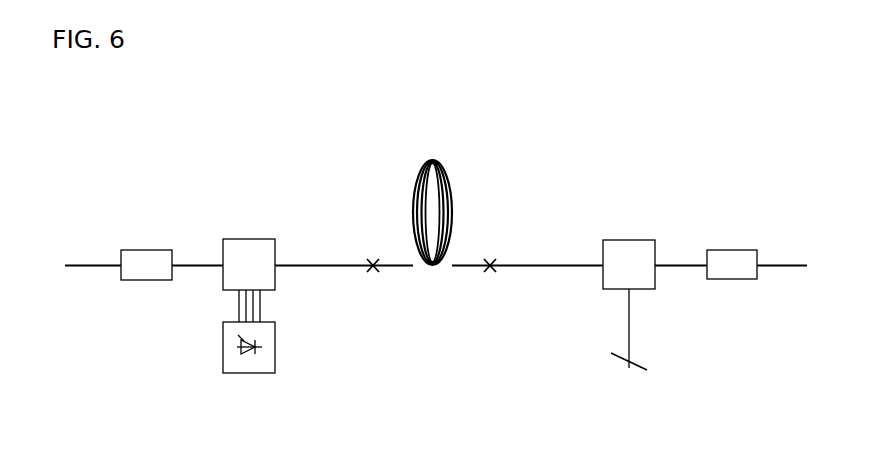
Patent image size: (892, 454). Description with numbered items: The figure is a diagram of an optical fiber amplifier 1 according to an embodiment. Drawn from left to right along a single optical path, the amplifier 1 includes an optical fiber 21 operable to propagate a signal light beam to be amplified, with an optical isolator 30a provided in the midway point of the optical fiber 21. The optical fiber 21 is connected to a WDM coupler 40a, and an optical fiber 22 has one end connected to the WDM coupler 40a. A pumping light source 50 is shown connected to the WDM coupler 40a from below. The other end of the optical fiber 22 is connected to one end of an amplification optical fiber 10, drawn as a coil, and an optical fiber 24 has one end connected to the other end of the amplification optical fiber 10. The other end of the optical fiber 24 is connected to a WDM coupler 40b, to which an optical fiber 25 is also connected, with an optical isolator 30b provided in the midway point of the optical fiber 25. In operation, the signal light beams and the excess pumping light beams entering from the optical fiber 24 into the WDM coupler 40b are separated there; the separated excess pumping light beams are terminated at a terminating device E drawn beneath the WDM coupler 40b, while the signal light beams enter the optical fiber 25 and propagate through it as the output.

The optical fiber amplifier 1 is at (601, 126).
The amplification optical fiber 10 is at (462, 266).
The optical fiber 21 is at (85, 266).
The optical fiber 22 is at (322, 266).
The optical fiber 24 is at (552, 266).
The optical fiber 25 is at (790, 266).
The optical isolator 30a is at (147, 257).
The optical isolator 30b is at (745, 257).
The WDM coupler 40a is at (247, 245).
The WDM coupler 40b is at (635, 245).
The pumping light source 50 is at (272, 366).
The terminating device E is at (638, 362).